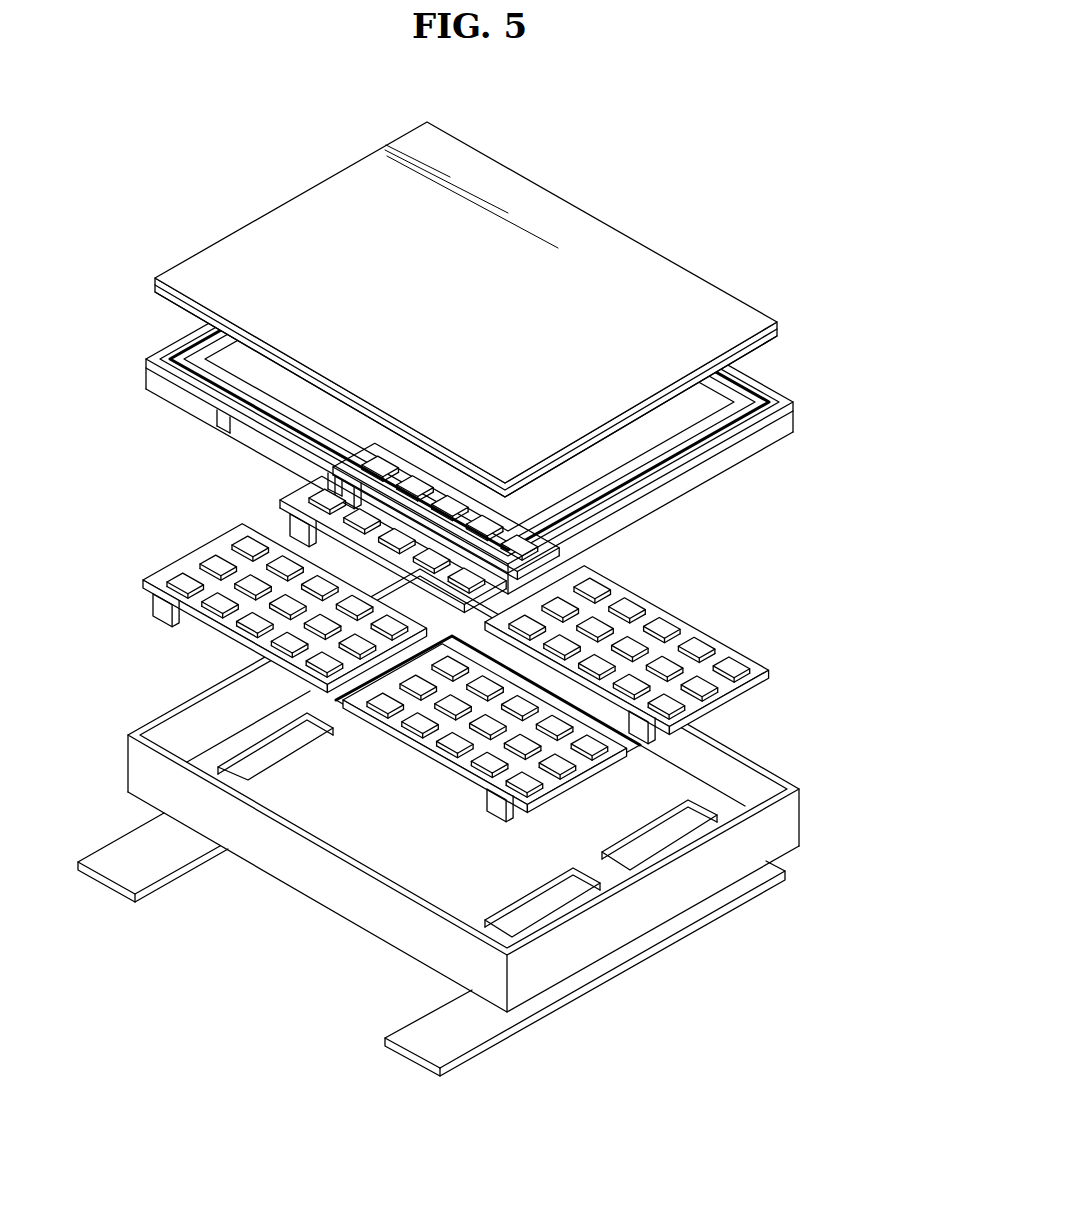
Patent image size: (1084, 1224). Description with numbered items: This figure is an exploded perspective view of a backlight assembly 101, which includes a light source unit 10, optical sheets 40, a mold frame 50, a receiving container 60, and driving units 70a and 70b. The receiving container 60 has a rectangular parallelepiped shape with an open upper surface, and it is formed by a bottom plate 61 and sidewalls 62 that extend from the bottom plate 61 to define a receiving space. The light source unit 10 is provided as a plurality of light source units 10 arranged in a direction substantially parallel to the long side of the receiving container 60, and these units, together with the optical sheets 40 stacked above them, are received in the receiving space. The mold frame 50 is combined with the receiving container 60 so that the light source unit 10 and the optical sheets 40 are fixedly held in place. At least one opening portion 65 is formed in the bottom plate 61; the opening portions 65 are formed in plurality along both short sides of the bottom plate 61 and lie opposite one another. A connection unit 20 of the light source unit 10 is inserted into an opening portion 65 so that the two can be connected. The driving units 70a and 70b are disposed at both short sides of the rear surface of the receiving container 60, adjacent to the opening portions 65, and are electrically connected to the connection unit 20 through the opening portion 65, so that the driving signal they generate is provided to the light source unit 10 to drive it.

The backlight assembly 101 is at (664, 125).
The optical sheets 40 is at (785, 328).
The mold frame 50 is at (793, 412).
The light source unit 10 is at (708, 603).
The connection unit 20 is at (503, 803).
The receiving container 60 is at (814, 768).
The bottom plate 61 is at (408, 835).
The sidewalls 62 is at (700, 878).
The opening portion 65 is at (505, 925).
The driving unit 70a is at (450, 1040).
The driving unit 70b is at (148, 866).